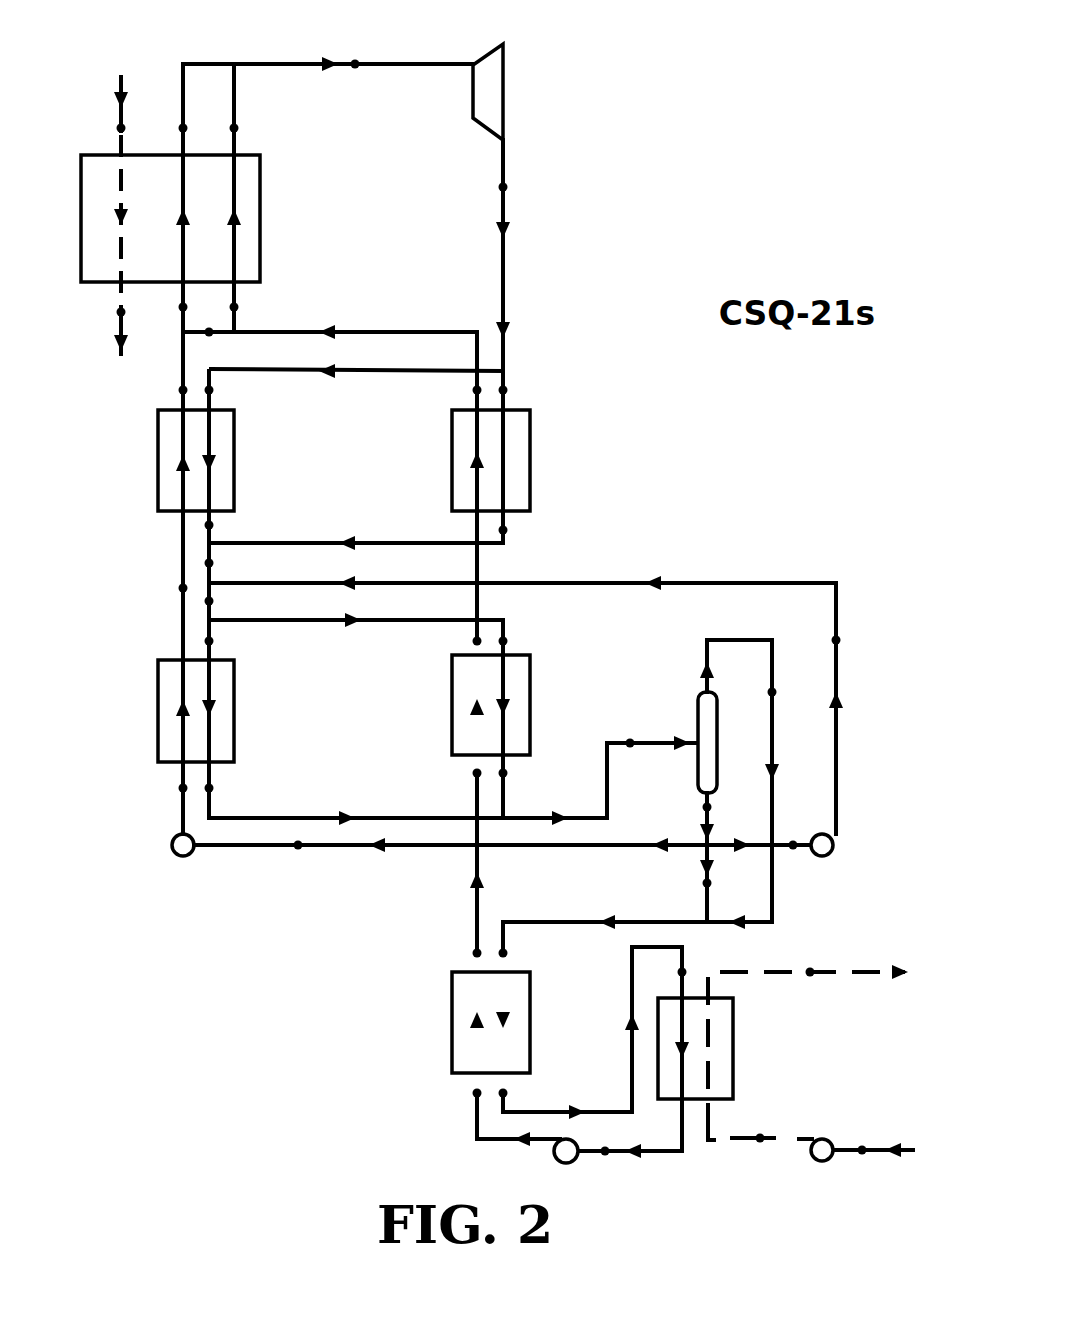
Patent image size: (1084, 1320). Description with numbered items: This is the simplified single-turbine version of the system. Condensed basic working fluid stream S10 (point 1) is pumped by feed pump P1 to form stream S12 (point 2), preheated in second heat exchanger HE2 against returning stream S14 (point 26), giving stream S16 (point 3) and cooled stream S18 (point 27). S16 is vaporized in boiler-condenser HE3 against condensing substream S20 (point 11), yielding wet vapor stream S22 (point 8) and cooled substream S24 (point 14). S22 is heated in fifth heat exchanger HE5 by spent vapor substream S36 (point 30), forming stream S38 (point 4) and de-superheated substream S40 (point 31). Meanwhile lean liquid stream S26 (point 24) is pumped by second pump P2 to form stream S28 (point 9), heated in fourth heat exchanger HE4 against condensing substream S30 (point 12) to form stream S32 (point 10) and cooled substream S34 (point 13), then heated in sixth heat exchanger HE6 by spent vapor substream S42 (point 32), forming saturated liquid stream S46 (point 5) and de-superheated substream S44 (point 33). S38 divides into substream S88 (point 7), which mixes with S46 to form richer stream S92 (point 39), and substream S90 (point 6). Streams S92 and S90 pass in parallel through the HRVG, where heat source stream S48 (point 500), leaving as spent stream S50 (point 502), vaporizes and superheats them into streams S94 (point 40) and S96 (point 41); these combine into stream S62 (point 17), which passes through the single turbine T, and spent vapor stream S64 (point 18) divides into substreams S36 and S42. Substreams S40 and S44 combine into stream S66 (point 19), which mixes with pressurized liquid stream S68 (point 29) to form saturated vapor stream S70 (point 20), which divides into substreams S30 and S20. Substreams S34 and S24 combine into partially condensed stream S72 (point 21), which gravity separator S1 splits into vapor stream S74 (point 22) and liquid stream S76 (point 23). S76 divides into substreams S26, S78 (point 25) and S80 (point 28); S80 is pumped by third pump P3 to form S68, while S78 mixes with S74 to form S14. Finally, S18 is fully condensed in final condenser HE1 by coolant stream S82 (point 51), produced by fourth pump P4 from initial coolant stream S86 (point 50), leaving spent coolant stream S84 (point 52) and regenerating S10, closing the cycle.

The element HRVG is at (211, 218).
The single turbine T is at (504, 92).
The first heat exchanger or final condenser HE1 is at (727, 1048).
The second heat exchanger or preheater HE2 is at (521, 1022).
The third heat exchanger or boiler-condenser HE3 is at (462, 705).
The fourth heat exchanger HE4 is at (225, 711).
The fifth heat exchanger HE5 is at (462, 460).
The sixth heat exchanger HE6 is at (225, 460).
The flash tank or gravity separator S1 is at (727, 742).
The first or feed pump P1 is at (565, 1167).
The second pump P2 is at (168, 846).
The third pump P3 is at (842, 846).
The fourth pump P4 is at (822, 1167).
The fully condensed basic working fluid stream S10 is at (685, 1160).
The intermediate pressure basic working fluid stream S12 is at (475, 1112).
The returning basic working fluid stream S14 is at (580, 918).
The heated basic working fluid stream S16 is at (475, 935).
The cooled returning basic working fluid stream S18 is at (605, 1108).
The second condensing lean combined working fluid substream S20 is at (450, 618).
The heated, vaporized basic working fluid stream S22 is at (480, 565).
The cooled second condensing combined working fluid substream S24 is at (506, 793).
The lean saturated liquid stream S26 is at (260, 850).
The high pressure lean liquid stream S28 is at (160, 805).
The first condensing lean combined working fluid substream S30 is at (212, 652).
The preheated high pressure lean liquid stream S32 is at (183, 632).
The cooled first condensing combined working fluid substream S34 is at (273, 812).
The first spent vapor substream S36 is at (505, 400).
The vaporized basic working fluid stream S38 is at (400, 316).
The first de-superheated vapor substream S40 is at (425, 540).
The second spent vapor substream S42 is at (430, 370).
The second de-superheated vapor substream S44 is at (200, 540).
The heated high pressure lean liquid stream S46 is at (183, 362).
The heat source stream S48 is at (121, 82).
The spent heat source stream S50 is at (115, 326).
The combined superheated working fluid stream S62 is at (372, 66).
The spent vapor stream S64 is at (503, 282).
The combined de-superheated stream S66 is at (205, 576).
The pressurized liquid stream S68 is at (450, 580).
The saturated vapor stream S70 is at (183, 615).
The partially condensed working fluid stream S72 is at (655, 740).
The saturated vapor stream S74 is at (735, 638).
The saturated liquid stream S76 is at (703, 832).
The second saturated liquid substream S78 is at (690, 895).
The third saturated liquid substream S80 is at (775, 850).
The coolant stream S82 is at (770, 1135).
The spent coolant stream S84 is at (875, 970).
The initial coolant stream S86 is at (870, 1160).
The first substream S88 is at (215, 336).
The second substream S90 is at (234, 298).
The richer stream S92 is at (183, 296).
The vaporized, superheated richer stream S94 is at (183, 78).
The vaporized, superheated basic working fluid substream S96 is at (234, 108).
The point 1 is at (604, 1163).
The point 2 is at (465, 1093).
The point 3 is at (465, 863).
The point 4 is at (463, 390).
The point 5 is at (169, 390).
The point 6 is at (247, 307).
The point 7 is at (208, 345).
The point 8 is at (465, 641).
The point 9 is at (169, 788).
The point 10 is at (167, 588).
The point 11 is at (519, 641).
The point 12 is at (226, 642).
The point 13 is at (226, 788).
The point 14 is at (519, 773).
The point 17 is at (355, 77).
The point 18 is at (488, 187).
The point 19 is at (226, 564).
The point 20 is at (226, 602).
The point 21 is at (630, 755).
The point 22 is at (788, 691).
The point 23 is at (692, 807).
The point 24 is at (298, 857).
The point 25 is at (692, 883).
The point 26 is at (519, 953).
The point 27 is at (593, 1032).
The point 28 is at (793, 857).
The point 29 is at (853, 640).
The point 30 is at (520, 390).
The point 31 is at (520, 531).
The point 32 is at (226, 390).
The point 33 is at (226, 525).
The point 39 is at (170, 307).
The point 40 is at (170, 129).
The point 41 is at (221, 129).
The point 50 is at (862, 1138).
The point 51 is at (758, 1127).
The point 52 is at (810, 960).
The point 500 is at (101, 129).
The heat source outlet point 502 is at (101, 313).